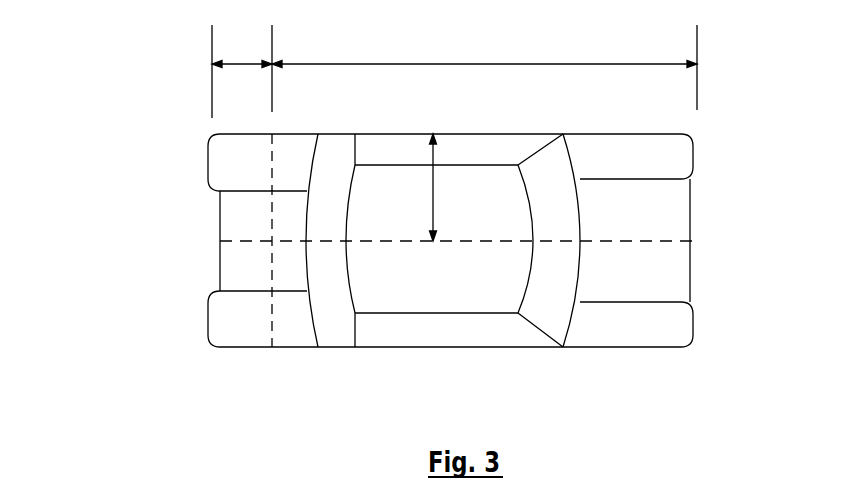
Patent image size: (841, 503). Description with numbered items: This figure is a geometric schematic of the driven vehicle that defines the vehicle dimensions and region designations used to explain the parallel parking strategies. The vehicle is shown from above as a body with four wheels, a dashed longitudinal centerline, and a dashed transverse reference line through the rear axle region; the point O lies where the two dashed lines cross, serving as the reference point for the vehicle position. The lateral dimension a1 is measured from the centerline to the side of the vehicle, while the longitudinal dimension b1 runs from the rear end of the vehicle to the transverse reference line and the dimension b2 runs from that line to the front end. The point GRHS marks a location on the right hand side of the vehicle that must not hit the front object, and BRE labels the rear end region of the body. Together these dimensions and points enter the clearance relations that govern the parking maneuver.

The rear boundary of vehicle body BRE is at (462, 262).
The origin point O(xn,yn) on vehicle longitudinal centre line O is at (273, 244).
The point G_RHS GRHS is at (272, 347).
The vehicle dimension b1 is at (242, 71).
The distance b2 from reference line to front end b2 is at (484, 68).
The vehicle dimension a1 is at (455, 187).